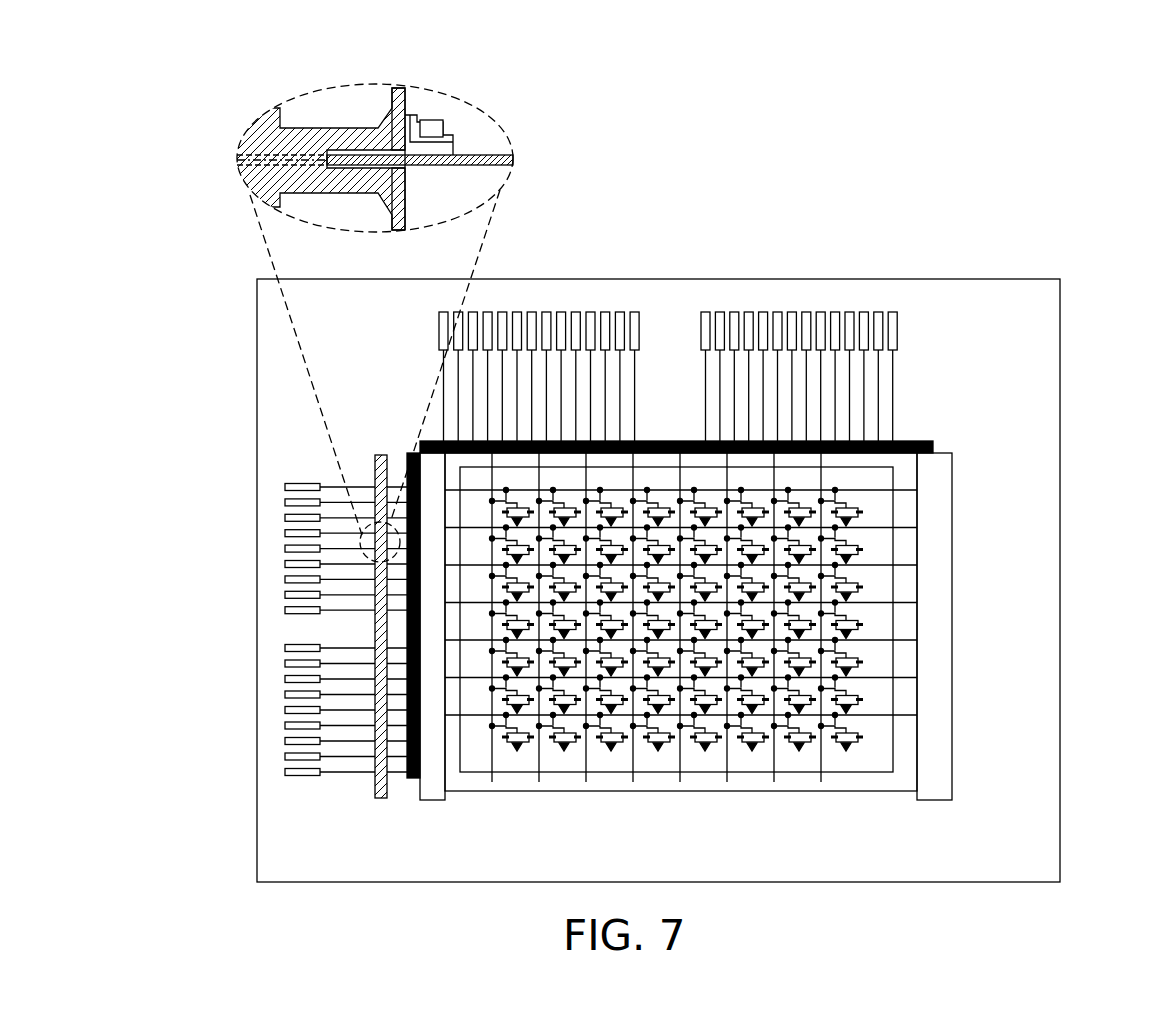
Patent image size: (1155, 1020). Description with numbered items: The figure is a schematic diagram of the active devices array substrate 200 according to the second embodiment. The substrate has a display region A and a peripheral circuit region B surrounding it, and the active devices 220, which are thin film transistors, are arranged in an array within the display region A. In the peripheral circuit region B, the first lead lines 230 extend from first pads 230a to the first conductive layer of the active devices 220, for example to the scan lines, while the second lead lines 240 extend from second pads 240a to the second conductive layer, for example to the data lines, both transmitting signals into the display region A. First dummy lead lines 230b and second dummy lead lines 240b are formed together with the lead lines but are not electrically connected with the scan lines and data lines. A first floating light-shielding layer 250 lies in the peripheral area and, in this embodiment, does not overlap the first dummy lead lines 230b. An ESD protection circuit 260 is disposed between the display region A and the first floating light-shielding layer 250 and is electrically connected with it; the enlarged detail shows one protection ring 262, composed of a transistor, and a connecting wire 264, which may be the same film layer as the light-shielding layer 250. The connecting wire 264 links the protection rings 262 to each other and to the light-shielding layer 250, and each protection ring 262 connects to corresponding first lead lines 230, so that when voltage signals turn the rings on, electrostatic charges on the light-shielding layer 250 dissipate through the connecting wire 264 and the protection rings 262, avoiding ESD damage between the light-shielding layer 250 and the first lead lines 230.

The active devices array substrate 200 is at (1132, 884).
The active devices 220 is at (858, 718).
The first lead lines 230 is at (391, 497).
The first pad 230a is at (296, 776).
The first dummy lead lines 230b is at (353, 480).
The second lead lines 240 is at (736, 316).
The second pad 240a is at (703, 312).
The second dummy lead lines 240b is at (895, 383).
The first floating light-shielding layer 250 is at (328, 128).
The ESD protection circuit 260 is at (501, 137).
The protection rings 262 is at (455, 118).
The connecting wire 264 is at (398, 90).
The display region A is at (519, 784).
The peripheral circuit region B is at (437, 822).